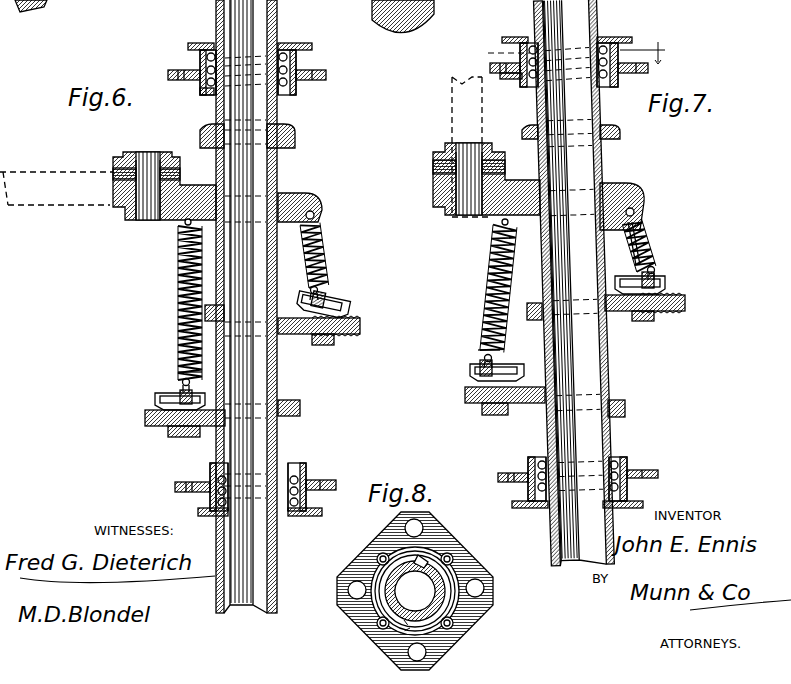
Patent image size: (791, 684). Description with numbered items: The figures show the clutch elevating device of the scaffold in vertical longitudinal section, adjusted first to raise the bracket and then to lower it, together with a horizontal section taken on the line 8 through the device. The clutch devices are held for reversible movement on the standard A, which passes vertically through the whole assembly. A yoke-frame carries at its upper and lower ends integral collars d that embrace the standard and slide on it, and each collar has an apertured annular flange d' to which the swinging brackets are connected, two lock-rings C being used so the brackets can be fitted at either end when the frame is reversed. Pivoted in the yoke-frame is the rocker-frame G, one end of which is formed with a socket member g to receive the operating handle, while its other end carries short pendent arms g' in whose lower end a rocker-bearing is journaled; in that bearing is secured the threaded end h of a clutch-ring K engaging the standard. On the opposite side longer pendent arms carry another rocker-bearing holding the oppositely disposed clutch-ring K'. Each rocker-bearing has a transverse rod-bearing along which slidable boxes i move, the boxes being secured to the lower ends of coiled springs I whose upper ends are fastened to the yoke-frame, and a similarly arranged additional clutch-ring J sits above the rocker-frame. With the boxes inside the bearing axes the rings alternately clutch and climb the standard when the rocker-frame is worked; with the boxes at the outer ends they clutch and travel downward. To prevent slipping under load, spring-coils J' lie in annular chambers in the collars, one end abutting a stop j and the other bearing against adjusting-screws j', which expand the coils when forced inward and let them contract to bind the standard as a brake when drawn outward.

In FIG. 6, the standard A is at (262, 172).
In FIG. 7, the standard A is at (566, 376).
In FIG. 8, the standard A is at (415, 591).
In FIG. 6, the lock-ring C is at (294, 44).
In FIG. 7, the lock-ring C is at (606, 38).
In FIG. 6, the spring-coil J' is at (251, 277).
In FIG. 7, the spring-coil J' is at (587, 272).
In FIG. 8, the spring-coil J' is at (397, 591).
In FIG. 6, the adjusting-screw j' is at (233, 279).
In FIG. 7, the adjusting-screw j' is at (598, 268).
In FIG. 6, the apertured annular flange d' is at (258, 282).
In FIG. 7, the apertured annular flange d' is at (569, 280).
In FIG. 8, the apertured annular flange d' is at (416, 590).
In FIG. 6, the collar d is at (269, 280).
In FIG. 7, the collar d is at (567, 272).
In FIG. 8, the collar d is at (415, 591).
In FIG. 6, the additional clutch-ring J is at (269, 315).
In FIG. 7, the additional clutch-ring J is at (578, 134).
In FIG. 6, the rocker-frame G is at (164, 199).
In FIG. 7, the rocker-frame G is at (477, 179).
In FIG. 6, the socket member g is at (122, 196).
In FIG. 7, the socket member g is at (444, 184).
In FIG. 7, the short pendent arm g' is at (626, 243).
In FIG. 6, the coiled spring I is at (178, 290).
In FIG. 7, the coiled spring I is at (488, 272).
In FIG. 6, the slidable box i is at (190, 386).
In FIG. 7, the slidable box i is at (472, 375).
In FIG. 6, the oppositely-disposed clutch-ring K' is at (235, 415).
In FIG. 7, the oppositely-disposed clutch-ring K' is at (545, 413).
In FIG. 6, the clutch-ring K is at (258, 333).
In FIG. 7, the clutch-ring K is at (582, 329).
In FIG. 6, the threaded end h is at (352, 336).
In FIG. 7, the threaded end h is at (686, 302).
In FIG. 7, the section line 8 is at (573, 53).
In FIG. 8, the stop j is at (431, 577).